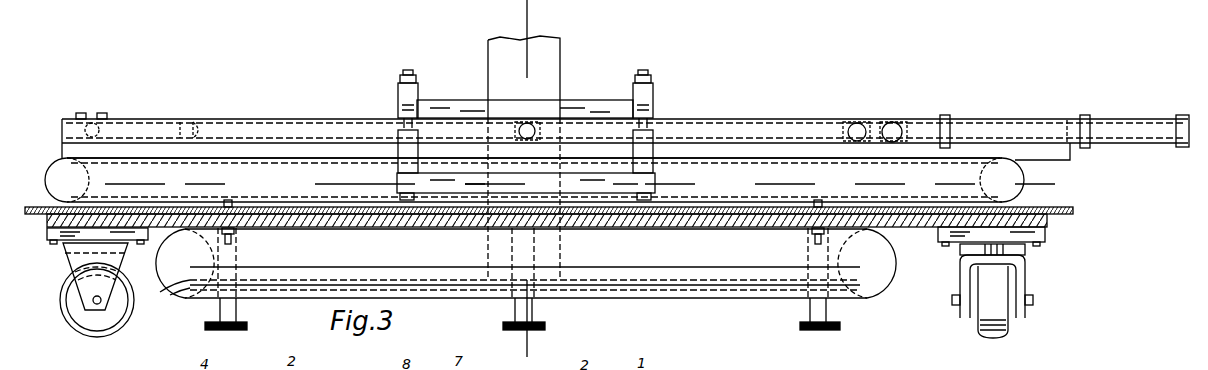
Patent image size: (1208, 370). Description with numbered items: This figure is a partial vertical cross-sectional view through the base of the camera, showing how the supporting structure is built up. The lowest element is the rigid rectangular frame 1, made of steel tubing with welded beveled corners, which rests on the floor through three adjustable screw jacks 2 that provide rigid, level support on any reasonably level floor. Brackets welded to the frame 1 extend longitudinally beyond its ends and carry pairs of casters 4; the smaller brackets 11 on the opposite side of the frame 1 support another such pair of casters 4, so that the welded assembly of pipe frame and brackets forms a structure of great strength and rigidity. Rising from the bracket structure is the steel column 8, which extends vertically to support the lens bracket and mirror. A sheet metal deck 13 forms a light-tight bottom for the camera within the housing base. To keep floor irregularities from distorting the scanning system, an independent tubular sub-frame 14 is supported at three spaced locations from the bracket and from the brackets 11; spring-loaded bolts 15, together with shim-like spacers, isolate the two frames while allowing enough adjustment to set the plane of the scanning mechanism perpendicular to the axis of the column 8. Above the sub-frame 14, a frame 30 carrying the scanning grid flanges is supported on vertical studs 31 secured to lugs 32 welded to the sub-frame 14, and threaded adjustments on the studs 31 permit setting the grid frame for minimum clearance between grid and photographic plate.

The rigid rectangular frame 1 is at (575, 290).
The adjustable screw jacks 2 is at (530, 18).
The casters 4 is at (70, 262).
The steel column 8 is at (557, 62).
The smaller brackets 11 is at (1042, 223).
The sheet metal deck 13 is at (933, 216).
The sub-frame 14 is at (1020, 183).
The spring-loaded bolts 15 is at (240, 245).
The frame 30 is at (570, 108).
The vertical studs 31 is at (655, 163).
The lugs 32 is at (645, 183).